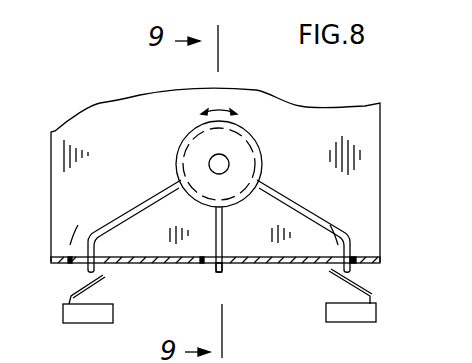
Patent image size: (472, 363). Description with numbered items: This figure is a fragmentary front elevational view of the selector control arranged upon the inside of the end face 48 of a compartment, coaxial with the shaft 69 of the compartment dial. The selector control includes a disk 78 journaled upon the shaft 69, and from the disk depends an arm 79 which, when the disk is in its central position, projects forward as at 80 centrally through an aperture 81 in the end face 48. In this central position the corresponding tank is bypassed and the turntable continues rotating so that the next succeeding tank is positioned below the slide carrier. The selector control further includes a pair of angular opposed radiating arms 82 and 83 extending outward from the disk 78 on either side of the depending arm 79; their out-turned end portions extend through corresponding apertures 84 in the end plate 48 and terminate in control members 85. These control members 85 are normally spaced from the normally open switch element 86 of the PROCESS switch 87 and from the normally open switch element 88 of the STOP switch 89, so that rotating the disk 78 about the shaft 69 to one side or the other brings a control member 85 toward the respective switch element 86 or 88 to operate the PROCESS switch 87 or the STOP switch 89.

The end face 48 is at (380, 170).
The shaft 69 is at (228, 160).
The disk 78 is at (190, 134).
The depending arm 79 is at (225, 233).
The forward projecting end 80 is at (223, 273).
The aperture 81 is at (212, 270).
The radiating arm 82 is at (154, 197).
The radiating arm 83 is at (301, 207).
The apertures 84 is at (79, 264).
The control members 85 is at (95, 259).
The switch element 86 is at (105, 282).
The PROCESS switch 87 is at (95, 324).
The switch element 88 is at (376, 292).
The STOP switch 89 is at (350, 323).